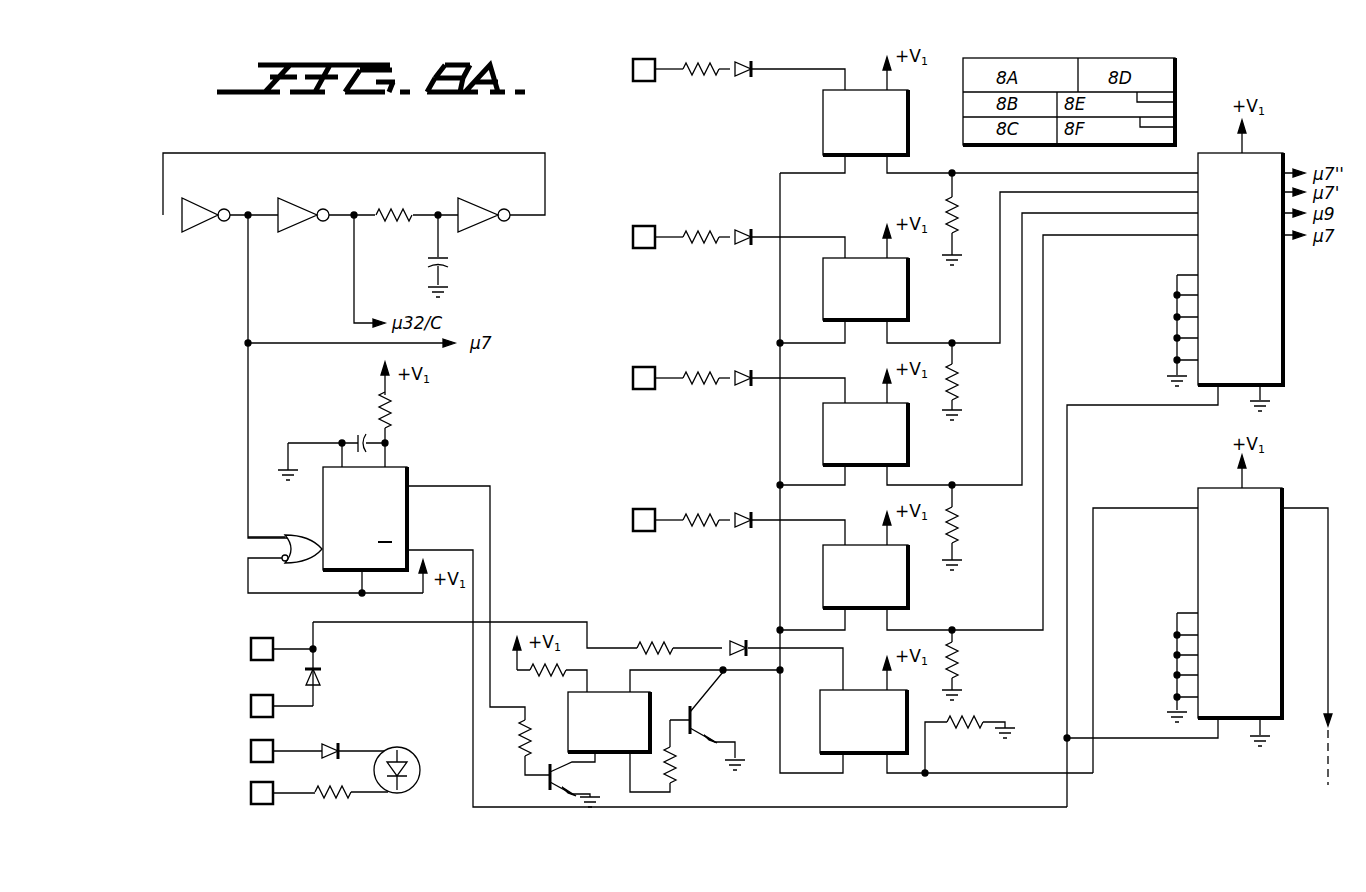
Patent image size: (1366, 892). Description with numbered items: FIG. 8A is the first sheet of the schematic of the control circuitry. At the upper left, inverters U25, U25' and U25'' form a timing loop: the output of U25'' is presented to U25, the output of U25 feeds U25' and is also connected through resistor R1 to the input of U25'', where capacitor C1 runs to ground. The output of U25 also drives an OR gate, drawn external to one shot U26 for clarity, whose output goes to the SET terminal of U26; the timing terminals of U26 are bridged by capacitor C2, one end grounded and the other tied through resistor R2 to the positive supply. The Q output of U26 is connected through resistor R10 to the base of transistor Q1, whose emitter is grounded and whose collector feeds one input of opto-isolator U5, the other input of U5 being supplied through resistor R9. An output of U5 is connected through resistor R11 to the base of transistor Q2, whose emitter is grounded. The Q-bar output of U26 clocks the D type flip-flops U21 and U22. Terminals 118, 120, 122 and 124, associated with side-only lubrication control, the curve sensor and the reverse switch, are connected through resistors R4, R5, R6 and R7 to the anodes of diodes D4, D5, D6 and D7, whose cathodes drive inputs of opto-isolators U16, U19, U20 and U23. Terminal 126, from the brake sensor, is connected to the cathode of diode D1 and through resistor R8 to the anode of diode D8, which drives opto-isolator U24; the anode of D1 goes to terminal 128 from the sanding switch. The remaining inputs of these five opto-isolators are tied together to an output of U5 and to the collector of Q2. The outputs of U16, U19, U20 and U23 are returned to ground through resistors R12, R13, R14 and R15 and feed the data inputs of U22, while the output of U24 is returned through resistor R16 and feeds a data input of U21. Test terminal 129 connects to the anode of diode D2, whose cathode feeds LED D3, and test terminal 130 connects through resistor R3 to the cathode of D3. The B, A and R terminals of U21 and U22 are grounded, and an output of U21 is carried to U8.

The input terminal 118 is at (633, 70).
The input terminal 120 is at (645, 225).
The terminal 122 is at (645, 367).
The terminal 124 is at (645, 510).
The terminal 126 is at (251, 650).
The terminal 128 is at (251, 707).
The terminal 129 is at (251, 752).
The terminal 130 is at (251, 794).
The resistor R1 is at (398, 206).
The resistor R2 is at (392, 415).
The resistor R3 is at (350, 786).
The resistor R4 is at (706, 84).
The resistor R5 is at (704, 222).
The resistor R6 is at (704, 364).
The resistor R7 is at (704, 506).
The resistor R8 is at (660, 640).
The resistor R9 is at (552, 680).
The resistor R10 is at (518, 747).
The resistor R11 is at (676, 774).
The resistor R12 is at (958, 214).
The resistor R13 is at (960, 380).
The resistor R14 is at (960, 523).
The resistor R15 is at (960, 658).
The resistor R16 is at (962, 732).
The diode D1 is at (325, 678).
The diode D2 is at (333, 746).
The LED D3 is at (410, 755).
The diode D4 is at (786, 83).
The diode D5 is at (748, 250).
The diode D6 is at (748, 390).
The diode D7 is at (748, 532).
The diode D8 is at (740, 640).
The capacitor C1 is at (450, 264).
The capacitor C2 is at (362, 430).
The transistor Q1 is at (546, 785).
The transistor Q2 is at (702, 722).
The opto-isolator U5 is at (609, 722).
The opto-isolator U16 is at (865, 122).
The opto-isolator U19 is at (865, 289).
The opto-isolator U20 is at (865, 434).
The D type flip-flop U21 is at (1240, 603).
The D type flip-flop U22 is at (1240, 269).
The opto-isolator U23 is at (865, 576).
The opto-isolator U24 is at (863, 721).
The inverter U25 is at (206, 235).
The inverter U25' is at (299, 235).
The inverter U25'' is at (502, 229).
The one shot U26 is at (365, 518).
The output to circuit of FIG. 8 U8 is at (1308, 660).